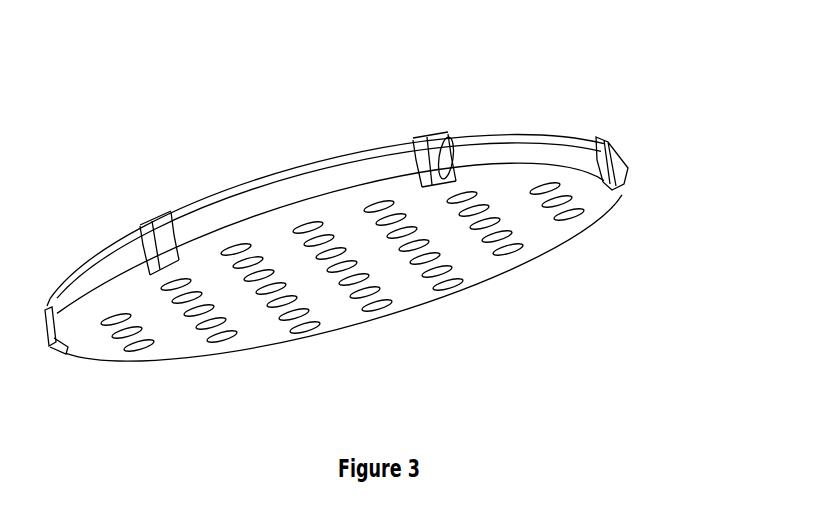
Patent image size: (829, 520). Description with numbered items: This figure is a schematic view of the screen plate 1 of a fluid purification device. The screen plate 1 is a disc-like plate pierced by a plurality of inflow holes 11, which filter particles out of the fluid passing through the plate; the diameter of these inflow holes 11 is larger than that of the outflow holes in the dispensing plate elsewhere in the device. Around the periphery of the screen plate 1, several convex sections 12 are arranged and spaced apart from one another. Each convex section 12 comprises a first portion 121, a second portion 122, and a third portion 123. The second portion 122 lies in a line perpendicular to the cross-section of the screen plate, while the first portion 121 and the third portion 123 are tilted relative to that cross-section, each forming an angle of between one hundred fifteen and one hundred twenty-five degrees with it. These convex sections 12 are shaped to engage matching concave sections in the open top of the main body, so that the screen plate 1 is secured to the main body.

The screen plate 1 is at (273, 177).
The inflow holes 11 is at (490, 253).
The convex sections 12 is at (464, 149).
The first portion 121 is at (416, 148).
The second portion 122 is at (447, 160).
The third portion 123 is at (600, 139).